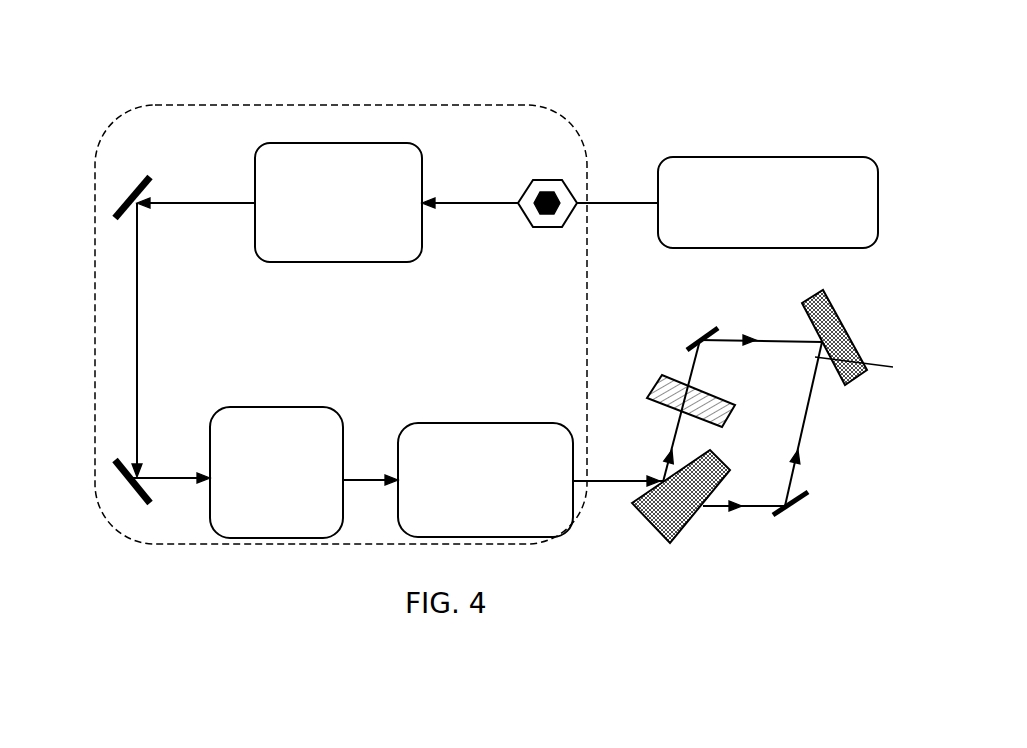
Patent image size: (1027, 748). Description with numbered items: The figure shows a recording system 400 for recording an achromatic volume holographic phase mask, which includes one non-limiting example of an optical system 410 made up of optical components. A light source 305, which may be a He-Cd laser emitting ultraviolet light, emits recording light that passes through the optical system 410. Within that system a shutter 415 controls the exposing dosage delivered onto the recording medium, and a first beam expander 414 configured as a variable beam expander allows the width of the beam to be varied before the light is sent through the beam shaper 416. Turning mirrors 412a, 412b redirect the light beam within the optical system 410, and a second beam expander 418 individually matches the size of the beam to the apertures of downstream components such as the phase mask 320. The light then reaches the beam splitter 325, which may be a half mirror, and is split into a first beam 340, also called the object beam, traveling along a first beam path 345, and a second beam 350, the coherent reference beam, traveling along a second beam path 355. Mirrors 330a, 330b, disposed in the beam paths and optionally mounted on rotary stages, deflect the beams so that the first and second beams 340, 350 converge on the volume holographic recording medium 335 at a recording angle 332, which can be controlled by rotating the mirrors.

The recording system 400 is at (160, 60).
The optical system 410 is at (467, 90).
The turning mirror 412a is at (144, 165).
The turning mirror 412b is at (117, 514).
The first beam expander 414 is at (338, 202).
The shutter 415 is at (540, 171).
The beam shaper 416 is at (276, 472).
The second beam expander 418 is at (485, 480).
The light source 305 is at (768, 202).
The phase mask 320 is at (657, 385).
The beam splitter 325 is at (658, 518).
The mirror 330a is at (700, 333).
The mirror 330b is at (800, 503).
The recording angle 332 is at (880, 371).
The volume holographic recording medium 335 is at (842, 318).
The first beam 340 is at (775, 338).
The first beam path 345 is at (693, 380).
The second beam 350 is at (813, 398).
The second beam path 355 is at (800, 410).